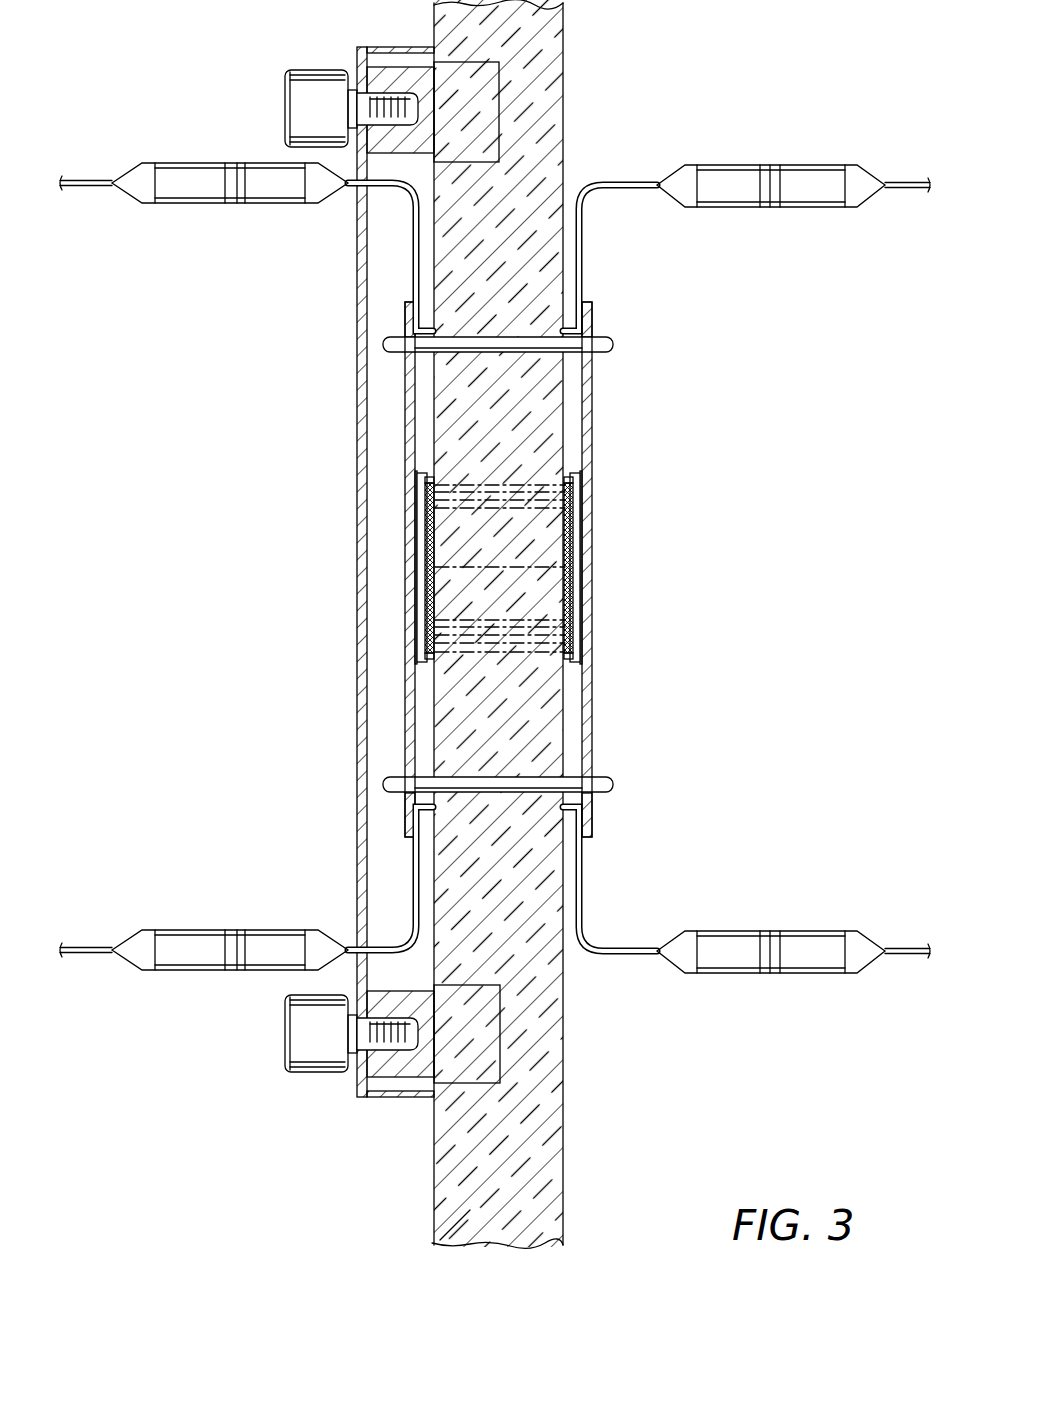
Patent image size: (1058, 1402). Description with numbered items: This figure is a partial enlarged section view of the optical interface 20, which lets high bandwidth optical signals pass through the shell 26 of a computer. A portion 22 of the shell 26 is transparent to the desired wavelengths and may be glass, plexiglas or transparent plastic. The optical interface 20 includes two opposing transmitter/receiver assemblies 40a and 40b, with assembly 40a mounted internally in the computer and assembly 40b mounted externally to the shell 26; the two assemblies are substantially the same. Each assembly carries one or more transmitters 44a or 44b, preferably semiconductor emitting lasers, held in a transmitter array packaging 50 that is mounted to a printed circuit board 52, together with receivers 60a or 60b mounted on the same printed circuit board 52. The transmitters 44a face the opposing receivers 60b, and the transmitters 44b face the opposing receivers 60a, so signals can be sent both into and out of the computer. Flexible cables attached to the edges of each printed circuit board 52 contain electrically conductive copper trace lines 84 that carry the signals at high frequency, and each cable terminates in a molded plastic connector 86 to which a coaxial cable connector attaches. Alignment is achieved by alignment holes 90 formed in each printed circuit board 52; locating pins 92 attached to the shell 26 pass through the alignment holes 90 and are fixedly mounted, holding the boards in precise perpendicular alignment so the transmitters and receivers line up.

The optical interface 20 is at (495, 624).
The transparent portion 22 is at (550, 82).
The shell 26 is at (545, 1130).
The transmitter/receiver assembly 40a is at (590, 717).
The transmitter/receiver assembly 40b is at (405, 607).
The transmitter 44a is at (590, 615).
The transmitter 44b is at (428, 530).
The transmitter array packaging 50 is at (428, 490).
The printed circuit board 52 is at (405, 717).
The receiver 60a is at (590, 523).
The receiver 60b is at (428, 630).
The trace lines 84 is at (620, 180).
The molded plastic connector 86 is at (735, 163).
The alignment holes 90 is at (403, 330).
The locating pins 92 is at (595, 335).